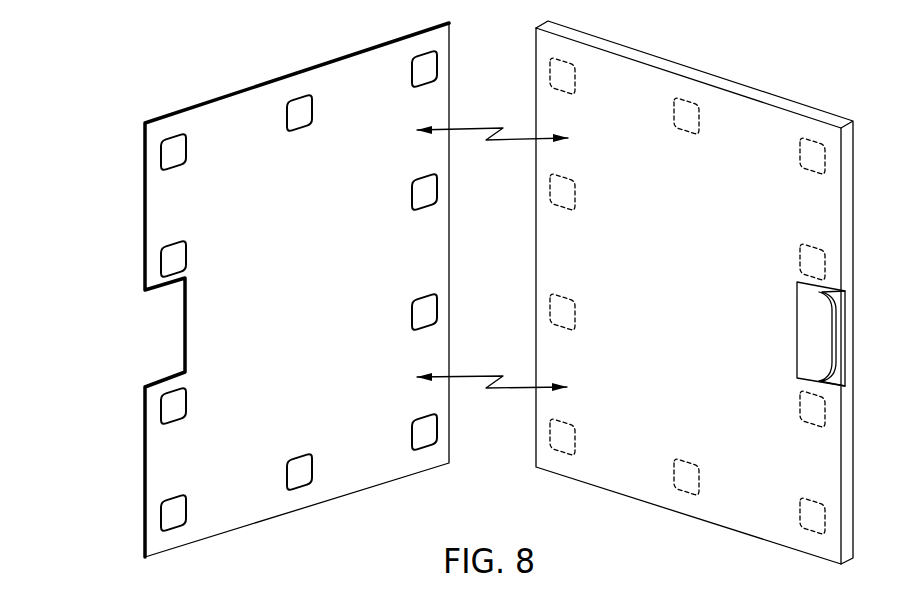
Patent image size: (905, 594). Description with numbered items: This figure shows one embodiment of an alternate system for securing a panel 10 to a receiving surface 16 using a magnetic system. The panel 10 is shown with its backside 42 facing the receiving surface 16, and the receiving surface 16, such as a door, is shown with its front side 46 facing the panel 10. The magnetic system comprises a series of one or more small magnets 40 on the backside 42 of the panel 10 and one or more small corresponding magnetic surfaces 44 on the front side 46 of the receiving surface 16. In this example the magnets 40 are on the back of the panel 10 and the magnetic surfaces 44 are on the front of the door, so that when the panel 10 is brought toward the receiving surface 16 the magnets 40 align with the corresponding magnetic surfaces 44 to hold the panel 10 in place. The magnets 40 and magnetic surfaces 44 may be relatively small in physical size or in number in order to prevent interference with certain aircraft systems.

The panel 10 is at (128, 100).
The receiving surface 16 is at (758, 498).
The magnets 40 is at (168, 518).
The backside 42 is at (314, 300).
The magnetic surfaces 44 is at (817, 145).
The front side 46 is at (702, 327).